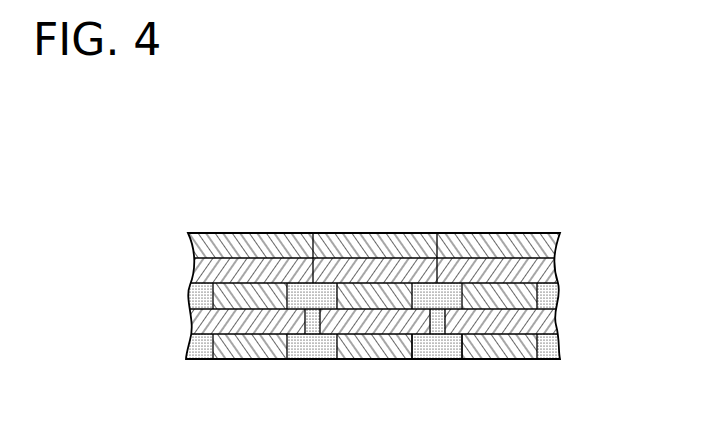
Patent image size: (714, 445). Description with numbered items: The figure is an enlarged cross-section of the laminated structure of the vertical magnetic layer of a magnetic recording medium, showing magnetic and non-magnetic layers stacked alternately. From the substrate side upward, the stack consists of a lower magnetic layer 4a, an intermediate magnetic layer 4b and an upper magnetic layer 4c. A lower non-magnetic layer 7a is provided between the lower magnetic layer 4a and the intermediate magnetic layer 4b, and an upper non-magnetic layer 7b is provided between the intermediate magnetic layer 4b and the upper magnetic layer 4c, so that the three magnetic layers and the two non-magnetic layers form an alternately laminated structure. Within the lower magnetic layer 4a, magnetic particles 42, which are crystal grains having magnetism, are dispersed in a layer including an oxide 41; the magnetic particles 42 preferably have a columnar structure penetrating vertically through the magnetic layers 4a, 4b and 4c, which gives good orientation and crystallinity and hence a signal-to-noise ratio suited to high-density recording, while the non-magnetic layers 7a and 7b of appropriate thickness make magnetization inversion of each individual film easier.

The lower magnetic layer 4a is at (538, 340).
The intermediate magnetic layer 4b is at (541, 293).
The upper magnetic layer 4c is at (549, 240).
The lower non-magnetic layer 7a is at (545, 322).
The upper non-magnetic layer 7b is at (547, 268).
The oxide 41 is at (437, 348).
The magnetic particles 42 is at (377, 348).